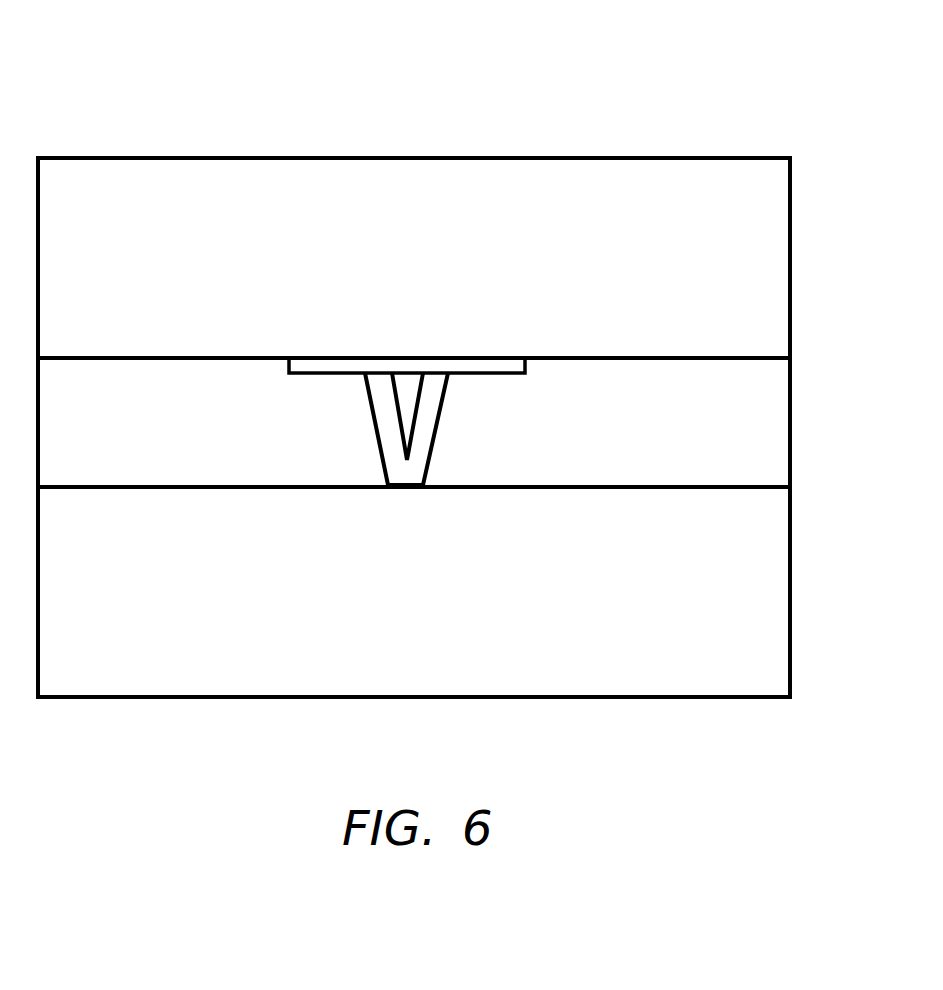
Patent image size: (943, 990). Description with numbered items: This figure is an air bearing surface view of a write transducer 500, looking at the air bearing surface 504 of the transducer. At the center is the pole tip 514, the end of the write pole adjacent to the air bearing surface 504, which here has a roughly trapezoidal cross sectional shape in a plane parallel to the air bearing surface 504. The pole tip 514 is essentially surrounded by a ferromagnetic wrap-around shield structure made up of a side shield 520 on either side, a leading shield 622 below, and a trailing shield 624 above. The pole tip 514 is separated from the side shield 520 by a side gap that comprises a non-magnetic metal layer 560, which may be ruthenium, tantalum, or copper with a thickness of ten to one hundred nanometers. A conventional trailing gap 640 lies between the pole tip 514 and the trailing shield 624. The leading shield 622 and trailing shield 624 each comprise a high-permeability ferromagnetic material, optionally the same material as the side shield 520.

The write transducer 500 is at (598, 97).
The air bearing surface 504 is at (670, 190).
The trailing shield 624 is at (189, 283).
The side shield 520 is at (189, 439).
The leading shield 622 is at (189, 603).
The trailing gap 640 is at (332, 367).
The non-magnetic metal layer 560 is at (432, 410).
The pole tip 514 is at (405, 387).